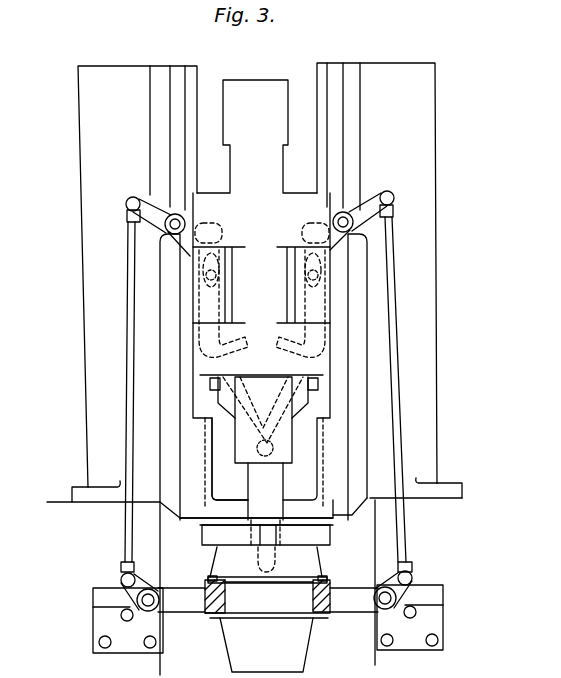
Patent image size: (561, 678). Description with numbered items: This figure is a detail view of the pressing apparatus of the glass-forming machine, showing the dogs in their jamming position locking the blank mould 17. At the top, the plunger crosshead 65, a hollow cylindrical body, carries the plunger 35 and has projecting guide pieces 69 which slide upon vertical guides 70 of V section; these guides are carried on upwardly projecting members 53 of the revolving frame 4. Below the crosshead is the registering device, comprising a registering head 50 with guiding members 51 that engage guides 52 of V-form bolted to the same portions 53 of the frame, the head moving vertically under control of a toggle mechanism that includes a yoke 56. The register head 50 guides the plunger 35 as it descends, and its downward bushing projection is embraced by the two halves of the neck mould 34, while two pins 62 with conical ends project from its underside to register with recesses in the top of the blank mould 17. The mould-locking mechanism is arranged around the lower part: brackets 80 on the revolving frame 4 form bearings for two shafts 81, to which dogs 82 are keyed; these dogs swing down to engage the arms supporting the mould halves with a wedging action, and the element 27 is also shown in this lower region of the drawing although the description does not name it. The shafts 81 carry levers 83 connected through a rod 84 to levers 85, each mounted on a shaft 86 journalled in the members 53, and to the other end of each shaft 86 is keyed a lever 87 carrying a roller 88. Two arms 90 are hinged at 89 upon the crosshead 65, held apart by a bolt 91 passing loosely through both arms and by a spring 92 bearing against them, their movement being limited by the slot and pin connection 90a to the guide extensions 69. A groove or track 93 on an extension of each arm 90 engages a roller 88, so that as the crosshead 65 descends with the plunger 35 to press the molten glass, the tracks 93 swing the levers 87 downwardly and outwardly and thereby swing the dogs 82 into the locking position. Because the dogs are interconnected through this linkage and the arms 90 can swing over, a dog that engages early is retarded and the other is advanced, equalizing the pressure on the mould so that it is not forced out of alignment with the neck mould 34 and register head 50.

The revolving frame 4 is at (254, 581).
The blank mould 17 is at (266, 645).
The bearing 27 is at (228, 600).
The neck mould 34 is at (215, 540).
The plunger 35 is at (270, 480).
The registering head 50 is at (330, 503).
The guiding members 51 is at (200, 450).
The guides 52 is at (200, 414).
The upwardly extending portions 53 is at (122, 372).
The yoke 56 is at (217, 513).
The pins 62 is at (283, 557).
The plunger crosshead 65 is at (257, 136).
The guide pieces 69 is at (200, 201).
The vertical guides 70 is at (192, 80).
The brackets 80 is at (112, 623).
The shafts 81 is at (160, 612).
The dogs 82 is at (183, 603).
The levers 83 is at (121, 595).
The rod 84 is at (131, 298).
The levers 85 is at (160, 220).
The shaft 86 is at (168, 232).
The lever 87 is at (203, 262).
The roller 88 is at (205, 278).
The hinge 89 is at (246, 470).
The arms 90 is at (227, 405).
The slot and pin connection 90a is at (300, 227).
The bolt 91 is at (252, 351).
The spring 92 is at (263, 420).
The track 93 is at (205, 315).